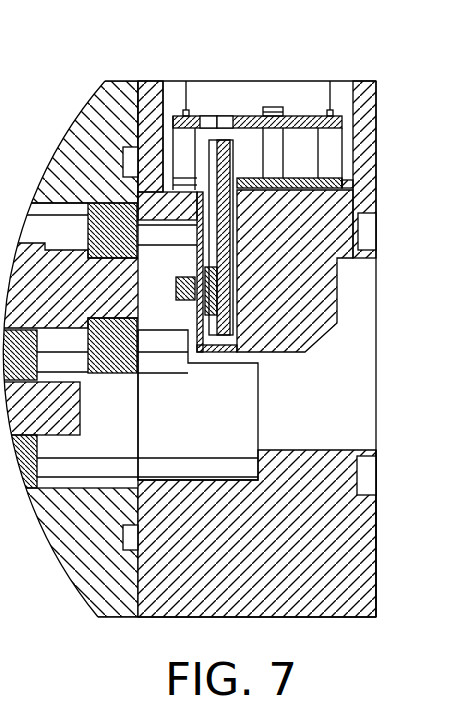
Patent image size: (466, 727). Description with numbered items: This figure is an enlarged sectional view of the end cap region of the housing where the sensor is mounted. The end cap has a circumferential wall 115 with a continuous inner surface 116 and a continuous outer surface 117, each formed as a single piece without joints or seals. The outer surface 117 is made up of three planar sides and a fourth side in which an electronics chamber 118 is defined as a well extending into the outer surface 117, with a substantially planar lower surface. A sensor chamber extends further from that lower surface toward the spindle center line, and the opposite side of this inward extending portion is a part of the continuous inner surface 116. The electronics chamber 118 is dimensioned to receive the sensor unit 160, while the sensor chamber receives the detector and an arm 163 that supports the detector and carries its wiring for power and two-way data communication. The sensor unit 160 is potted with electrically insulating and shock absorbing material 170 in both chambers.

The circumferential wall 115 is at (376, 570).
The continuous inner surface 116 is at (323, 450).
The continuous outer surface 117 is at (343, 618).
The electronics chamber 118 is at (343, 92).
The sensor unit 160 is at (238, 115).
The arm 163 is at (377, 190).
The electrically insulating and shock absorbing material 170 is at (352, 185).